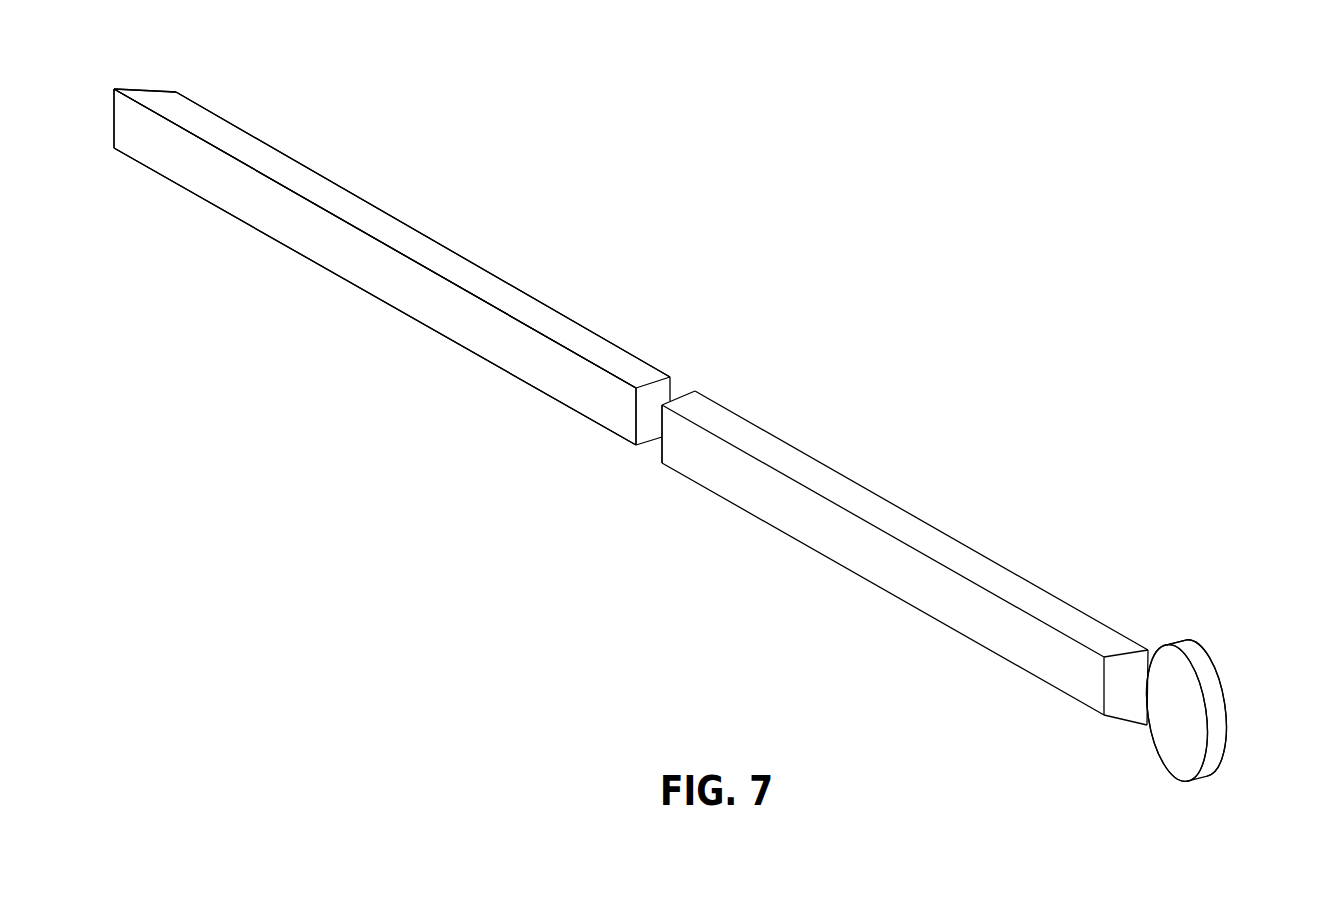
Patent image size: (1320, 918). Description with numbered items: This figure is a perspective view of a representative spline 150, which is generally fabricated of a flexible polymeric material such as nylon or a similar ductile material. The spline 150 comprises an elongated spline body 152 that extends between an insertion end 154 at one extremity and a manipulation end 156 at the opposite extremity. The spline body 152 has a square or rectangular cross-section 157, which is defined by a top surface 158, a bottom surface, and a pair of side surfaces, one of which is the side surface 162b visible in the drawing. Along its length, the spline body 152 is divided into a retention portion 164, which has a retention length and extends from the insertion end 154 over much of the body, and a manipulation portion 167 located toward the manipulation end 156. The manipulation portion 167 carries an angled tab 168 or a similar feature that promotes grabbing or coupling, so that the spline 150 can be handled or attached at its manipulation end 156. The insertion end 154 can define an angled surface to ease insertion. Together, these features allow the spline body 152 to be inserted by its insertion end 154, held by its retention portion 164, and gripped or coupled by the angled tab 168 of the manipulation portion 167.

The spline 150 is at (822, 205).
The spline body 152 is at (523, 380).
The insertion end 154 is at (120, 87).
The manipulation end 156 is at (1215, 695).
The cross-section 157 is at (658, 393).
The top surface 158 is at (810, 533).
The side surface 162b is at (552, 325).
The retention portion 164 is at (412, 240).
The manipulation portion 167 is at (1182, 660).
The angled tab 168 is at (1168, 757).